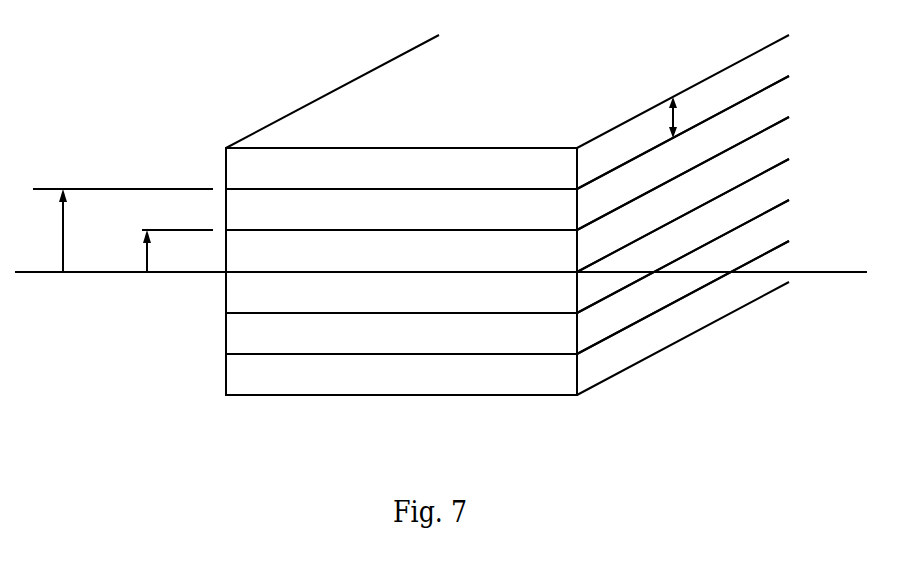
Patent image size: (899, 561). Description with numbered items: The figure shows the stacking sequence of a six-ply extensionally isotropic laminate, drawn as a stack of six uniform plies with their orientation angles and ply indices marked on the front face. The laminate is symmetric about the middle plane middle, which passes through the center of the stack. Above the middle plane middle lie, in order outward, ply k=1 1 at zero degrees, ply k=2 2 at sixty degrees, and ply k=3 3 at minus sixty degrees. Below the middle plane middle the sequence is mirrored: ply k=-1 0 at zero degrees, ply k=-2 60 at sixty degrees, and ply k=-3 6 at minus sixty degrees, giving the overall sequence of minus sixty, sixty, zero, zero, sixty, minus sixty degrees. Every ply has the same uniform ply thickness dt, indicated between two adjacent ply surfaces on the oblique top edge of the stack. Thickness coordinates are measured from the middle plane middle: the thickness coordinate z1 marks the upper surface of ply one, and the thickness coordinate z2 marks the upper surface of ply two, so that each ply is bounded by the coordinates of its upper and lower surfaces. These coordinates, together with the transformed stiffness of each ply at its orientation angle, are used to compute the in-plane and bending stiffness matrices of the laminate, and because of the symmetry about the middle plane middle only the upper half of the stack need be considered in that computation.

The ply k= 3 is at (507, 112).
The ply k= 2 is at (507, 153).
The ply k= 1 is at (507, 194).
The ply k=-1 0 is at (507, 236).
The ply k=-2 60 is at (507, 277).
The ply k=-3 6 is at (507, 318).
The middle plane middle is at (441, 274).
The thickness coordinate Z2 z2 is at (120, 230).
The thickness coordinate Z1 z1 is at (160, 248).
The ply thickness Δt dt is at (691, 115).